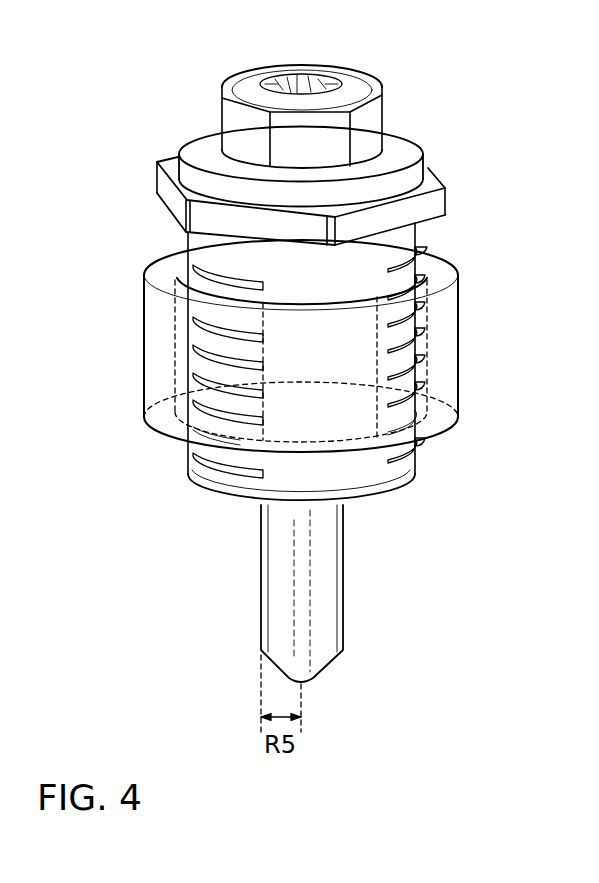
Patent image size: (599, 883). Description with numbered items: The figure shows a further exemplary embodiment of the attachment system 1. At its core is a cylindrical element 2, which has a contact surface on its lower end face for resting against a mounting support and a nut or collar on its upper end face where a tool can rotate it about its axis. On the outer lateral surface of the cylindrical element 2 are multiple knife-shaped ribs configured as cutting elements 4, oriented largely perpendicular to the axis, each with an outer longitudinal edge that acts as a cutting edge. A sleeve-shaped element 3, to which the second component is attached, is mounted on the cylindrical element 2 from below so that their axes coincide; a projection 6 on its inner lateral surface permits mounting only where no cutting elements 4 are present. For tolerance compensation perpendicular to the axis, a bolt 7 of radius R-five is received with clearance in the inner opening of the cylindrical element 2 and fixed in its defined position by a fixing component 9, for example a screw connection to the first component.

The attachment system 1 is at (124, 95).
The cylindrical element 2 is at (348, 475).
The sleeve-shaped element 3 is at (157, 332).
The cutting elements 4 is at (418, 253).
The projection 6 is at (332, 303).
The bolt 7 is at (325, 630).
The fixing component 9 is at (367, 117).